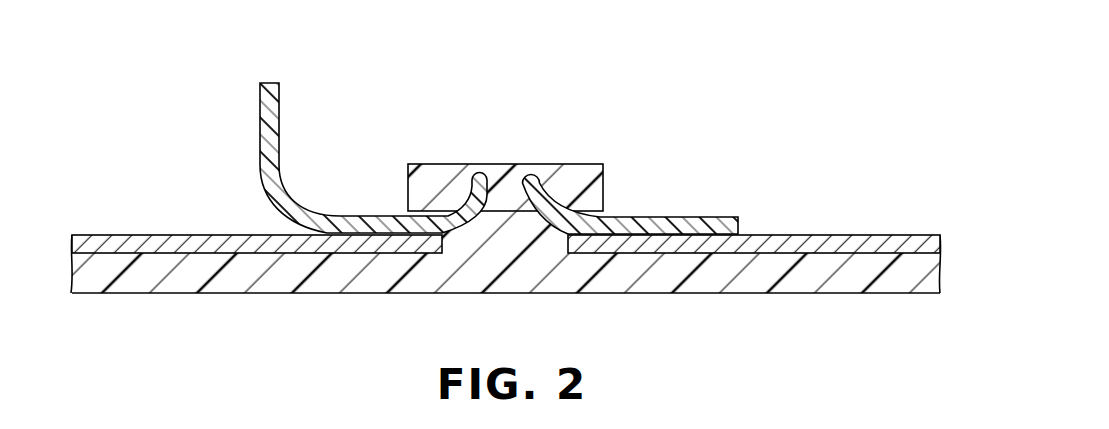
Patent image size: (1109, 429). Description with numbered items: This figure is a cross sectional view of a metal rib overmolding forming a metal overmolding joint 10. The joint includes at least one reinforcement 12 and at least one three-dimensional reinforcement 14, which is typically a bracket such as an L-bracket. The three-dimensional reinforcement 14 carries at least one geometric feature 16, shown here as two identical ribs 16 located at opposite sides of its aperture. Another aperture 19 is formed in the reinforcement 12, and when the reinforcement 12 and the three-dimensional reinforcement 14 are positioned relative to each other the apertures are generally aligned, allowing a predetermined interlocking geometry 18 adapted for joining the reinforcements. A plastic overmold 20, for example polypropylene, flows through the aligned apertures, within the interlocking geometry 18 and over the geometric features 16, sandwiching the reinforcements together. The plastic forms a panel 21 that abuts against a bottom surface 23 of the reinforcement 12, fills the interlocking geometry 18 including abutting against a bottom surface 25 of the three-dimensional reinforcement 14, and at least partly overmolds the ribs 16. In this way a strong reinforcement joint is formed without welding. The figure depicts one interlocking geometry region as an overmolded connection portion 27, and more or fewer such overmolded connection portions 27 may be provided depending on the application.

The metal overmolding joint 10 is at (614, 50).
The reinforcement 12 is at (767, 236).
The 3D reinforcement 14 is at (260, 122).
The geometric feature 16 is at (465, 199).
The interlocking geometry 18 is at (544, 256).
The aperture 19 is at (570, 242).
The plastic overmold 20 is at (448, 164).
The panel 21 is at (362, 285).
The bottom surface 23 is at (253, 255).
The bottom surface 25 is at (457, 232).
The overmolded connection portion 27 is at (372, 116).